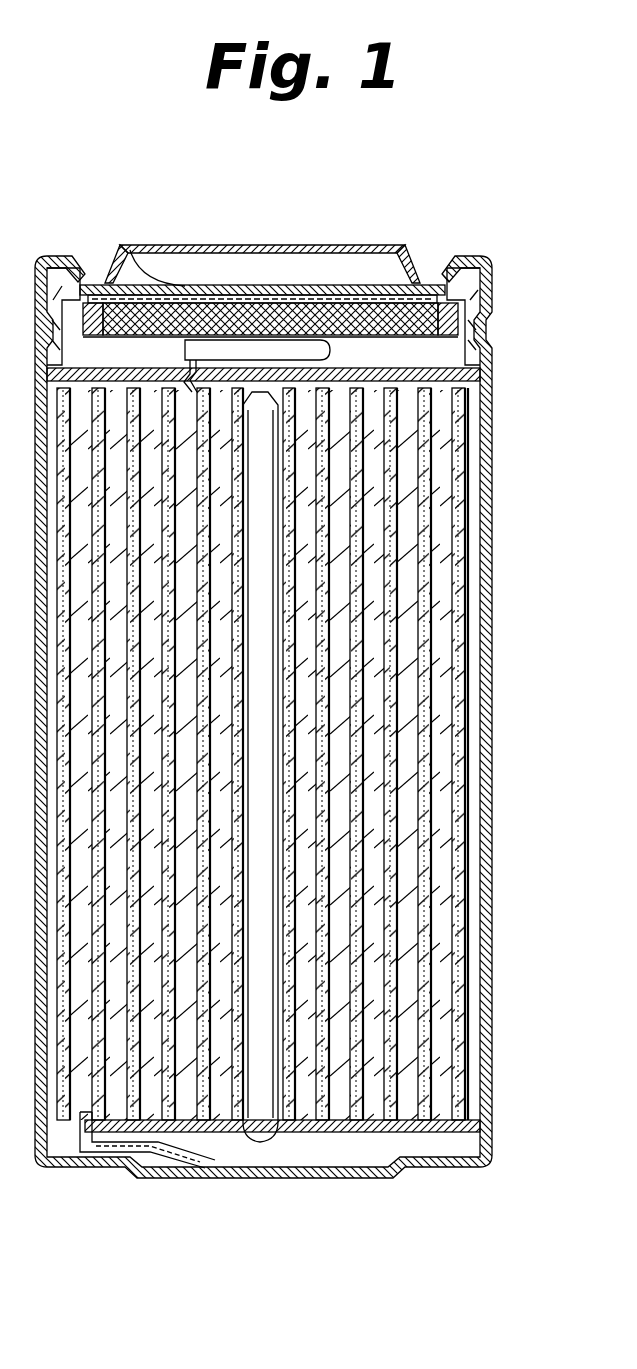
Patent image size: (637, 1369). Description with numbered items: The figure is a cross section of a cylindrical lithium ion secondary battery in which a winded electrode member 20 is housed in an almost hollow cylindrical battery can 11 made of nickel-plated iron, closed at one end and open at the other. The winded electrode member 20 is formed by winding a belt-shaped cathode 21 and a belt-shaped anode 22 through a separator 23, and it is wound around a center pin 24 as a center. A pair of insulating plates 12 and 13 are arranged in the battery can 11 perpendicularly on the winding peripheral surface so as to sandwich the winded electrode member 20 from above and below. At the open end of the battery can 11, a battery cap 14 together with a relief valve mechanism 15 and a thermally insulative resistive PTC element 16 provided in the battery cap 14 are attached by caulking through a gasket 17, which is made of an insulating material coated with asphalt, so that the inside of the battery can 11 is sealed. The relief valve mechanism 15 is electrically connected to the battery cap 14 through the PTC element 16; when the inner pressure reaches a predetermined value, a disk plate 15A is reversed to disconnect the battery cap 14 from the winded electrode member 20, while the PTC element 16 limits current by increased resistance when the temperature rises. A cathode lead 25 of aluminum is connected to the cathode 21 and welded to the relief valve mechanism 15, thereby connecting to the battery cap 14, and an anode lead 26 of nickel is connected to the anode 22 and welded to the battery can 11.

The battery can 11 is at (494, 434).
The insulating plate 12 is at (479, 375).
The insulating plate 13 is at (486, 1128).
The battery cap 14 is at (235, 246).
The relief valve mechanism 15 is at (396, 275).
The disk plate 15A is at (342, 300).
The PTC element 16 is at (481, 291).
The gasket 17 is at (486, 342).
The winded electrode member 20 is at (303, 754).
The cathode 21 is at (408, 607).
The anode 22 is at (443, 663).
The separator 23 is at (434, 720).
The center pin 24 is at (262, 762).
The cathode lead 25 is at (130, 252).
The anode lead 26 is at (170, 1166).